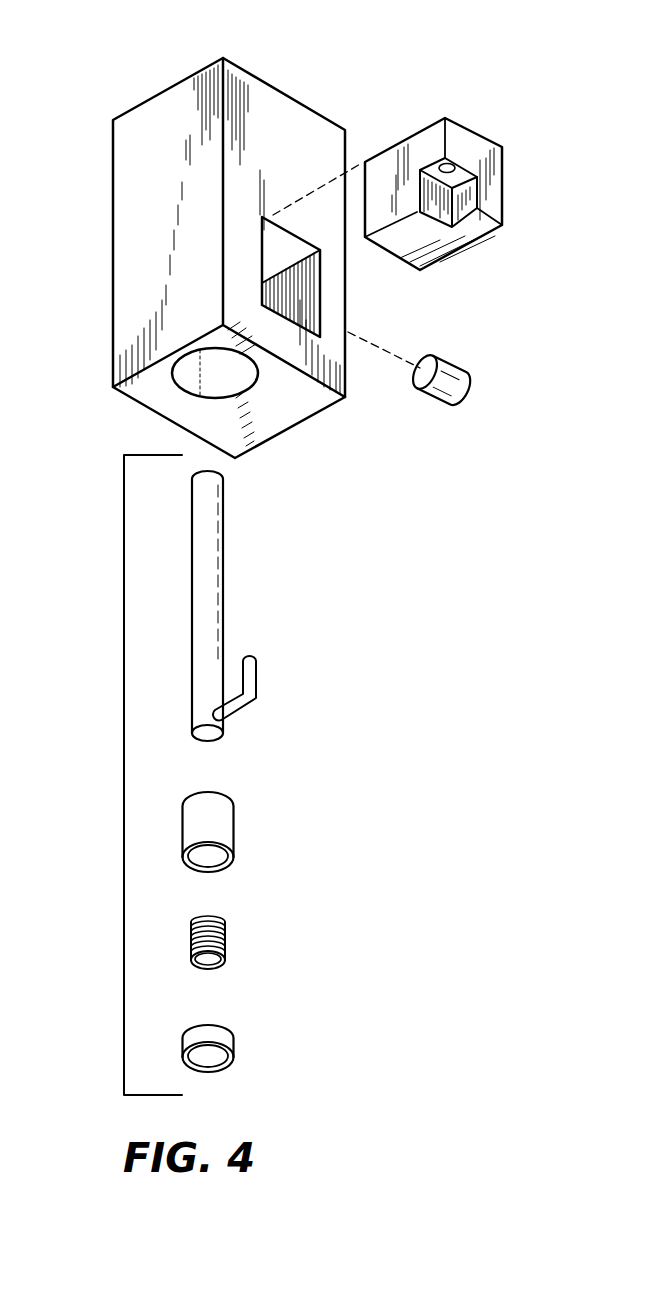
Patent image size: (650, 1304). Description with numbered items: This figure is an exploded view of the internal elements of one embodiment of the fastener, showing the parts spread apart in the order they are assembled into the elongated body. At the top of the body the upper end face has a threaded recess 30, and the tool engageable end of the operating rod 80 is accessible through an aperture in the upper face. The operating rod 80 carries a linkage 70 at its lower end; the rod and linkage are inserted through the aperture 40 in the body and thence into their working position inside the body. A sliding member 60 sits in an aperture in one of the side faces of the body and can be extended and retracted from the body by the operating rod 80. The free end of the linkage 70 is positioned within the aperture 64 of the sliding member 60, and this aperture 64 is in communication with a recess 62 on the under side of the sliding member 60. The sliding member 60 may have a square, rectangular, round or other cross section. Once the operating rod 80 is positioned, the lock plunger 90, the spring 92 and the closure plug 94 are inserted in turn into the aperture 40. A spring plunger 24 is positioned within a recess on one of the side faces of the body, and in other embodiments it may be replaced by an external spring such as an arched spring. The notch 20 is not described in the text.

The threaded recess 30 is at (178, 108).
The aperture 40 is at (215, 347).
The notch / receiving cavity 20 is at (318, 300).
The spring plunger 24 is at (448, 362).
The sliding member 60 is at (427, 230).
The recess 62 is at (430, 162).
The aperture 64 is at (450, 160).
The operating rod 80 is at (210, 545).
The linkage 70 is at (260, 667).
The lock plunger 90 is at (222, 822).
The spring 92 is at (225, 930).
The closure plug 94 is at (222, 1040).